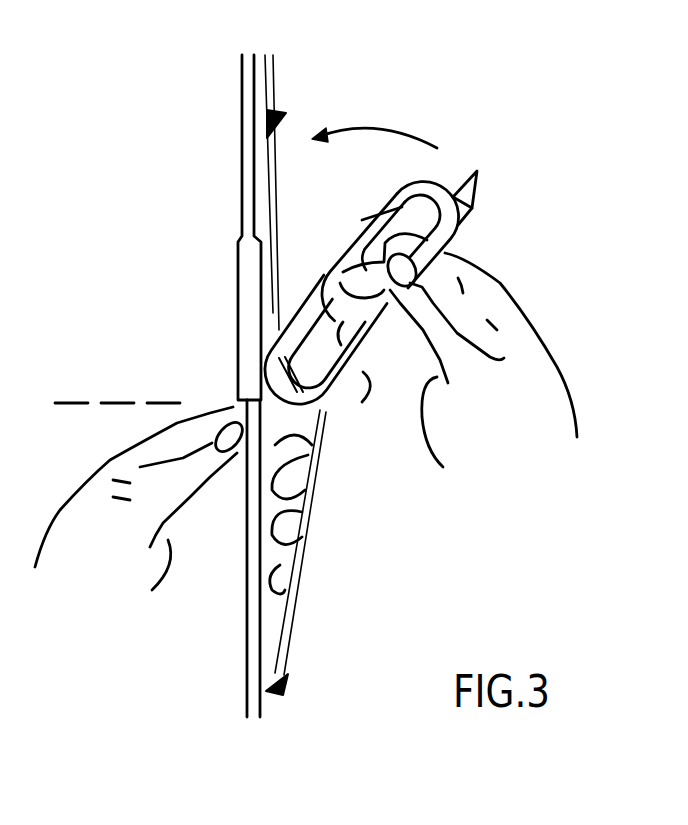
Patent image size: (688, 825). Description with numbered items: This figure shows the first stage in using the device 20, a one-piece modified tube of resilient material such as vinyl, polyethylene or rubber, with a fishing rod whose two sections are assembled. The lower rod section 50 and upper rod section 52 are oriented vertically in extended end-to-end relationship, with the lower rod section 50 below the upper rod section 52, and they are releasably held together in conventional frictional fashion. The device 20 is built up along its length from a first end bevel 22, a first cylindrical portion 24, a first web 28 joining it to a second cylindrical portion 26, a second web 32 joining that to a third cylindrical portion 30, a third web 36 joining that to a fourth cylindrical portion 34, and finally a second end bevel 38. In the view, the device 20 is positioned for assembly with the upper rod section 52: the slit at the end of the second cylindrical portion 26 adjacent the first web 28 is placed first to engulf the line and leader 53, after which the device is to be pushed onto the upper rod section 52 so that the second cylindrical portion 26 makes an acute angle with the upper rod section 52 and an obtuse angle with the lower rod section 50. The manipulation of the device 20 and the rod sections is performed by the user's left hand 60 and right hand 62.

The device 20 is at (340, 413).
The first end bevel 22 is at (473, 194).
The first cylindrical portion 24 is at (370, 338).
The second cylindrical portion 26 is at (290, 340).
The first web 28 is at (283, 382).
The third cylindrical portion 30 is at (425, 258).
The second web 32 is at (440, 188).
The fourth cylindrical portion 34 is at (357, 248).
The third web 36 is at (342, 307).
The second end bevel 38 is at (383, 218).
The lower rod section 50 is at (250, 628).
The upper rod section 52 is at (248, 163).
The line and leader 53 is at (272, 146).
The left hand 60 is at (111, 558).
The right hand 62 is at (527, 413).